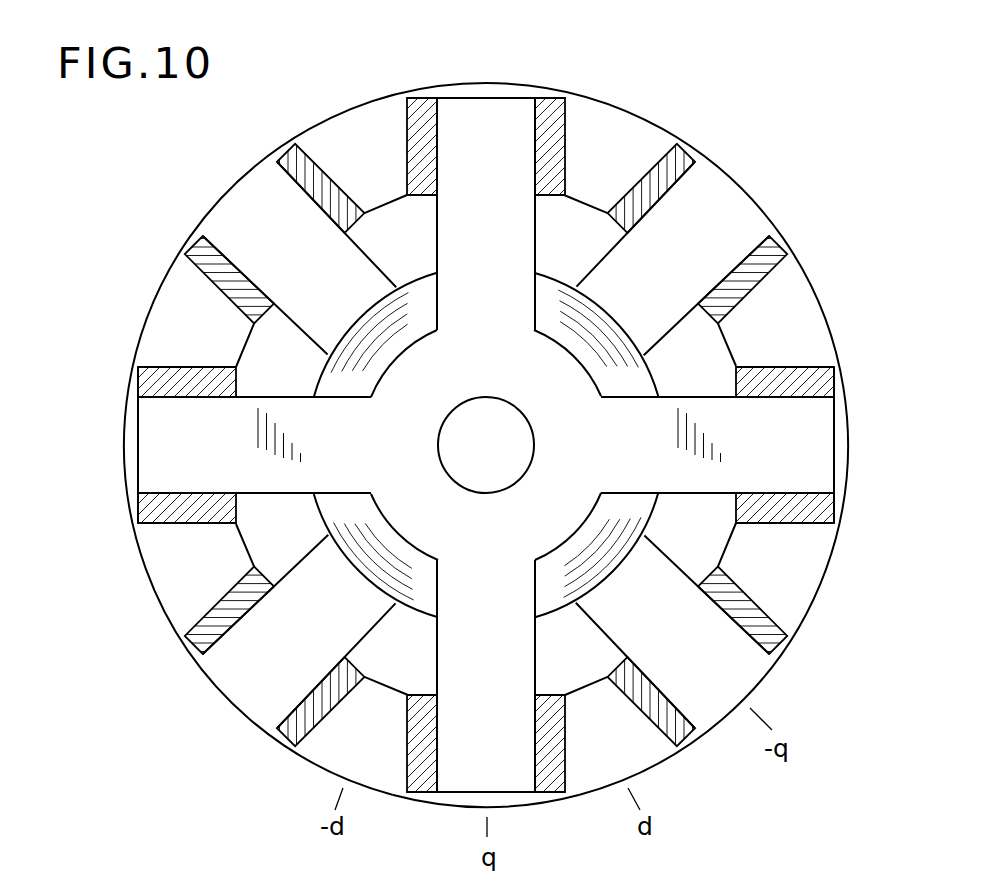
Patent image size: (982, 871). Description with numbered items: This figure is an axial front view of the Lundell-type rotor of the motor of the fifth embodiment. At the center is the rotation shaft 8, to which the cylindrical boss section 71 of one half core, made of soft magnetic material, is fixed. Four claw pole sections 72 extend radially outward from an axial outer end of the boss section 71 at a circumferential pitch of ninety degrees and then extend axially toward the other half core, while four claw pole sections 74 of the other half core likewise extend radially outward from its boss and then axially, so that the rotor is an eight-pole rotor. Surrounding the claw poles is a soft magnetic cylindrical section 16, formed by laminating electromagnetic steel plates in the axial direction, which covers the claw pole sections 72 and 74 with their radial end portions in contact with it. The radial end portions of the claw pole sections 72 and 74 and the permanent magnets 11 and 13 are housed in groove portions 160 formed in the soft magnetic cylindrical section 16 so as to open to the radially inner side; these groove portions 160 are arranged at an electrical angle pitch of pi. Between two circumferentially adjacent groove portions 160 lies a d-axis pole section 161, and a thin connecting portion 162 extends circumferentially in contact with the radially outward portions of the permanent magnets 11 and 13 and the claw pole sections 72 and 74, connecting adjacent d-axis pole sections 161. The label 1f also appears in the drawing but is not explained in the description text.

The rotation shaft 8 is at (535, 445).
The permanent magnet 11 is at (290, 160).
The permanent magnet 13 is at (423, 103).
The soft magnetic cylindrical section 16 is at (361, 96).
The boss section 71 is at (417, 365).
The claw pole section 72 is at (492, 110).
The claw pole section 74 is at (240, 213).
The groove portion 160 is at (322, 186).
The d-axis pole section 161 is at (337, 127).
The connecting portion 162 is at (498, 800).
The flux barrier surface 1f is at (650, 508).